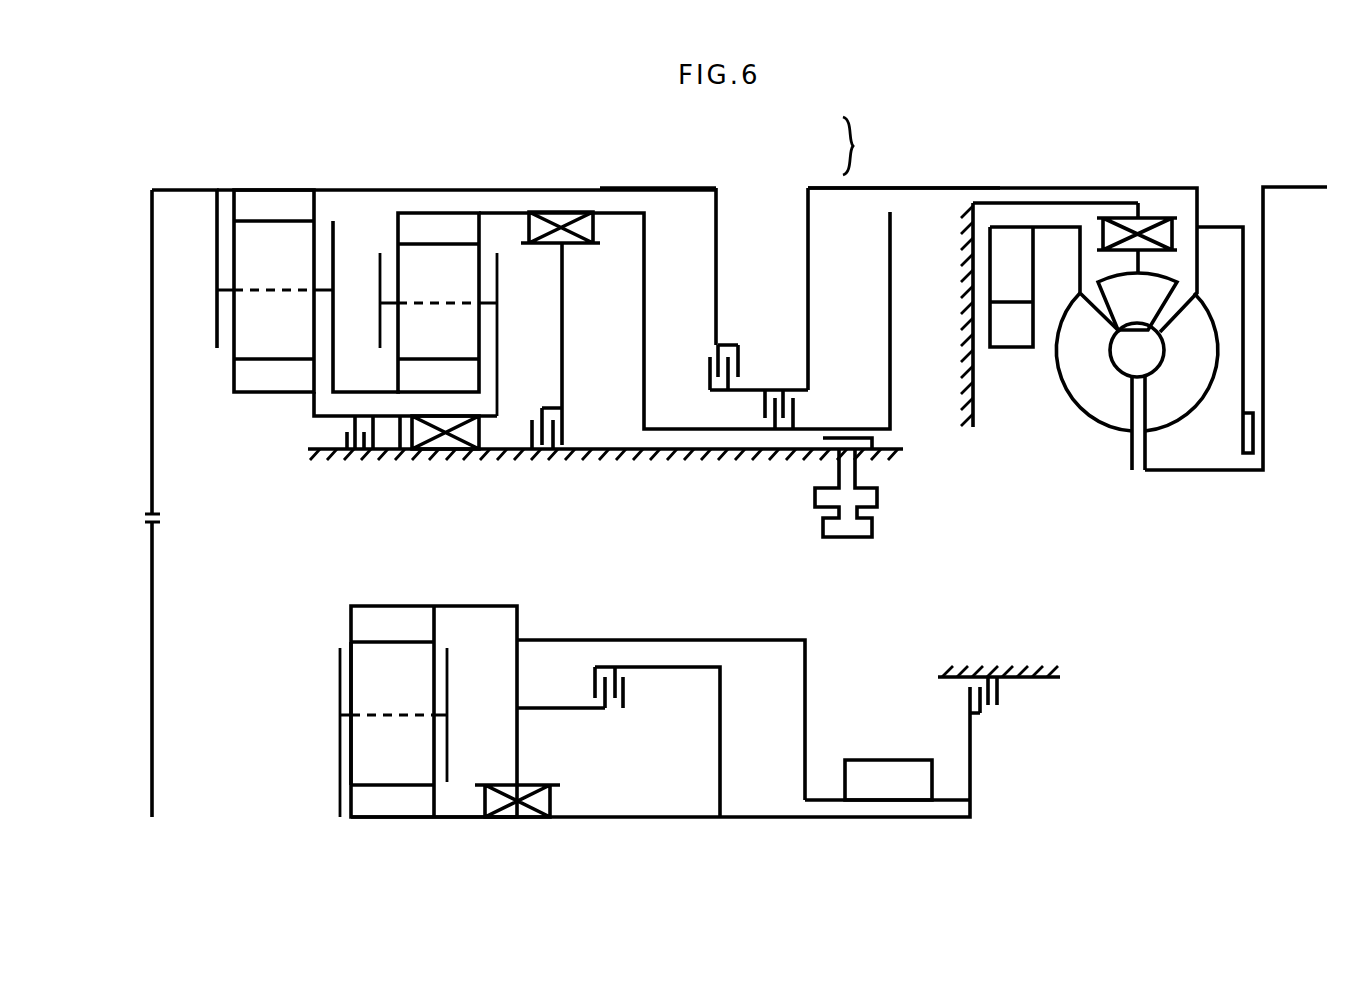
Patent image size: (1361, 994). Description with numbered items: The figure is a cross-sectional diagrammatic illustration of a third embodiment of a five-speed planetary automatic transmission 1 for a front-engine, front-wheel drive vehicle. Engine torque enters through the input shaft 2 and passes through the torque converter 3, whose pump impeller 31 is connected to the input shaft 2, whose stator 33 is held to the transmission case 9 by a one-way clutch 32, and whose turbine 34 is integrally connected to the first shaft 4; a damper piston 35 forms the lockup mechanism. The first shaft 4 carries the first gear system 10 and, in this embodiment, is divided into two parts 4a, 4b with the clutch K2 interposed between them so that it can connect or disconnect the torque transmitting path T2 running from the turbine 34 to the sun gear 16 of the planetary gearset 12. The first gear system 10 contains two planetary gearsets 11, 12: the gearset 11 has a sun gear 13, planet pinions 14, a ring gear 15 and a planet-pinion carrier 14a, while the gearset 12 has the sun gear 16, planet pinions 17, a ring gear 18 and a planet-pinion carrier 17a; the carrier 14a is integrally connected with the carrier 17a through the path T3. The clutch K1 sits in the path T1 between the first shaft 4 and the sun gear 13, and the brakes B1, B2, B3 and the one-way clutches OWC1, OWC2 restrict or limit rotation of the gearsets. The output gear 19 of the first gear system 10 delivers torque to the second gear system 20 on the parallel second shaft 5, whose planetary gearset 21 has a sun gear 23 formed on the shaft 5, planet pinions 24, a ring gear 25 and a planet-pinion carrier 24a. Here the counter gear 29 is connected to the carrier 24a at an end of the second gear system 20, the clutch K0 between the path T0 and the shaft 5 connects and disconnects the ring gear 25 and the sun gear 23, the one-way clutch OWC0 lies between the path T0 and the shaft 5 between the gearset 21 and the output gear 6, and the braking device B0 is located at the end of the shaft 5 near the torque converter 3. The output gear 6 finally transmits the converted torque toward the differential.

The automatic transmission 1 is at (1062, 182).
The input shaft 2 is at (1293, 185).
The torque converter 3 is at (1108, 439).
The first rotatable shaft 4 is at (800, 152).
The first shaft part 4a is at (813, 187).
The first shaft part 4b is at (697, 187).
The second rotatable shaft 5 is at (768, 818).
The transmission output gear 6 is at (887, 768).
The transmission case 9 is at (640, 453).
The first gear system 10 is at (488, 188).
The planetary gearset 11 is at (448, 212).
The planetary gearset 12 is at (278, 189).
The sun gear 13 is at (417, 222).
The planet pinions 14 is at (433, 260).
The planet-pinion carrier 14a is at (380, 327).
The ring gear 15 is at (438, 386).
The sun gear 16 is at (250, 200).
The planet pinions 17 is at (240, 265).
The planet-pinion carrier 17a is at (213, 247).
The ring gear 18 is at (283, 384).
The output gear 19 is at (152, 455).
The second gear system 20 is at (400, 829).
The planetary gearset 21 is at (339, 680).
The sun gear 23 is at (370, 807).
The planet pinions 24 is at (370, 687).
The planet-pinion carrier 24a is at (340, 768).
The ring gear 25 is at (368, 623).
The counter gear 29 is at (150, 623).
The pump impeller 31 is at (1078, 383).
The one-way clutch 32 is at (1143, 228).
The stator 33 is at (1153, 288).
The turbine 34 is at (1183, 407).
The damper piston 35 is at (1245, 313).
The braking device B0 is at (982, 719).
The braking device B1 is at (866, 466).
The braking device B2 is at (360, 451).
The braking device B3 is at (545, 455).
The clutch K0 is at (612, 709).
The clutch K1 is at (781, 430).
The clutch K2 is at (710, 355).
The torque transmitting path T0 is at (733, 640).
The torque transmitting path T1 is at (643, 390).
The torque transmitting path T2 is at (805, 238).
The torque transmitting path T3 is at (400, 455).
The one-way clutch OWC0 is at (512, 813).
The one-way clutch OWC1 is at (572, 210).
The one-way clutch OWC2 is at (445, 447).